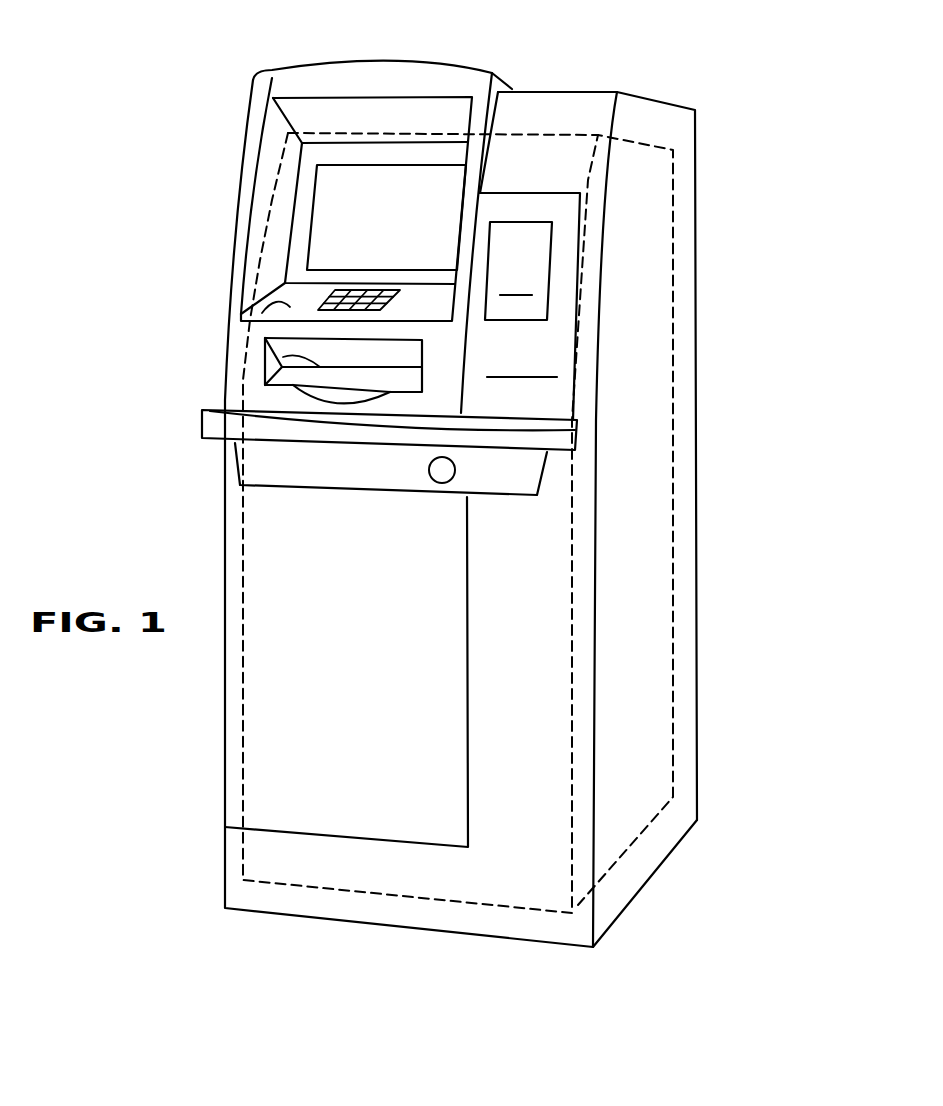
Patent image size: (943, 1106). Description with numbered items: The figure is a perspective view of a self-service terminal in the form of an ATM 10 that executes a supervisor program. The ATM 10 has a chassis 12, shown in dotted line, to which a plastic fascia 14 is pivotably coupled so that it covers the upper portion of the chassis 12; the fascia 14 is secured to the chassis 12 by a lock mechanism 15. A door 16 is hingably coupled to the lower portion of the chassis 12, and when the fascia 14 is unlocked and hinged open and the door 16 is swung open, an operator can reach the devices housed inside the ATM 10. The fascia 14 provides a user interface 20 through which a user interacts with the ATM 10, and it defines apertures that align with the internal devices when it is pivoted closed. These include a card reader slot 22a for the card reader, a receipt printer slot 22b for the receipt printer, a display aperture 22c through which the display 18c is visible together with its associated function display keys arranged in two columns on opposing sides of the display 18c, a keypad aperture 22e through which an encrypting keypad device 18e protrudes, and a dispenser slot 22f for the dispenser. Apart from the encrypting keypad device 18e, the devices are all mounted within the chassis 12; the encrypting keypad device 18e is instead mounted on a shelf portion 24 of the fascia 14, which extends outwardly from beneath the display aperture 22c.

The ATM 10 is at (750, 682).
The chassis 12 is at (675, 170).
The fascia 14 is at (473, 70).
The lock mechanism 15 is at (432, 476).
The door 16 is at (233, 730).
The display 18c is at (418, 182).
The encrypting keypad device 18e is at (357, 298).
The user interface 20 is at (190, 289).
The card reader slot 22a is at (518, 295).
The receipt printer slot 22b is at (532, 375).
The display aperture 22c is at (352, 157).
The keypad aperture 22e is at (325, 298).
The dispenser slot 22f is at (282, 358).
The shelf portion 24 is at (283, 302).